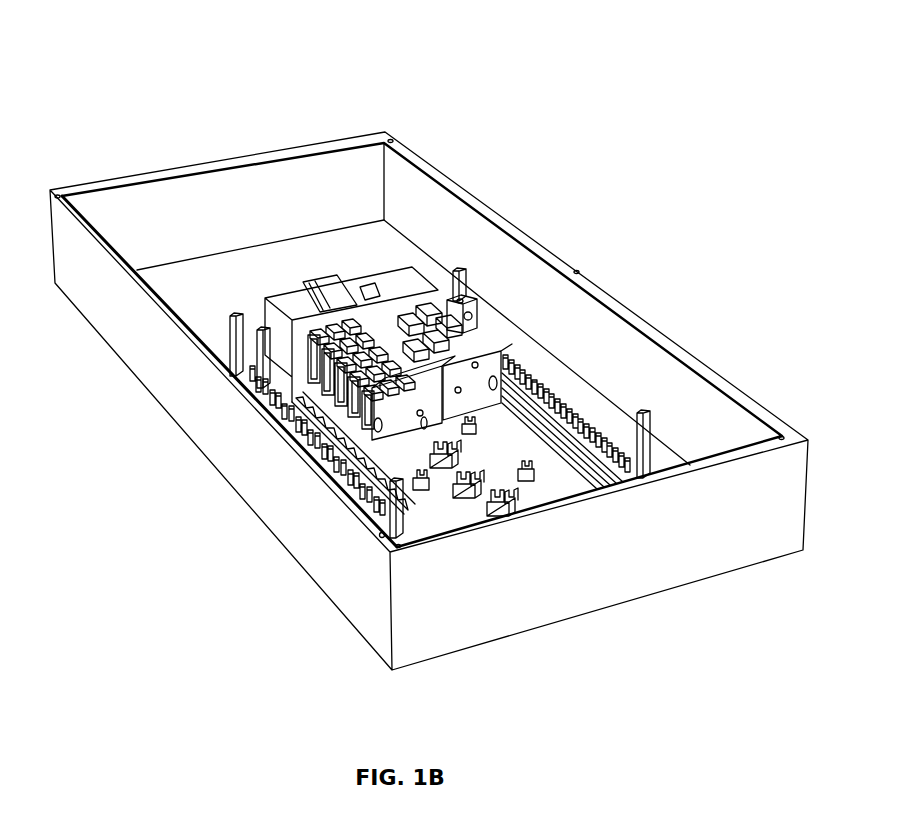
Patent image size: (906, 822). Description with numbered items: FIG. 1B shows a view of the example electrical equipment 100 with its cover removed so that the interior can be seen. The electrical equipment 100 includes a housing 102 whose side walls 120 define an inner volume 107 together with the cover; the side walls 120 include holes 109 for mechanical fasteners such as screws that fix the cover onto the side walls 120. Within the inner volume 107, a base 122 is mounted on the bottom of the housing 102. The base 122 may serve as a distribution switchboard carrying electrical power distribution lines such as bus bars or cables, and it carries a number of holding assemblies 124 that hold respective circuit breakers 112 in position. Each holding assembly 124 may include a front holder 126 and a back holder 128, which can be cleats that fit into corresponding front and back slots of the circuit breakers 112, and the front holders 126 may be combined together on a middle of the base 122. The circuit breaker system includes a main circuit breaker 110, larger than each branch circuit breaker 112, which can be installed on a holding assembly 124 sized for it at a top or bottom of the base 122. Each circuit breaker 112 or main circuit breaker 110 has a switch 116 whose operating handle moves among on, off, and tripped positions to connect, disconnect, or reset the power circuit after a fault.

The electrical equipment 100 is at (163, 52).
The housing 102 is at (225, 193).
The inner volume 107 is at (208, 290).
The holes 109 is at (377, 533).
The main circuit breaker 110 is at (393, 278).
The circuit breakers 112 is at (470, 335).
The switch 116 is at (447, 275).
The side walls 120 is at (163, 172).
The base 122 is at (548, 475).
The holding assemblies 124 is at (530, 503).
The front holder 126 is at (512, 453).
The back holder 128 is at (560, 487).